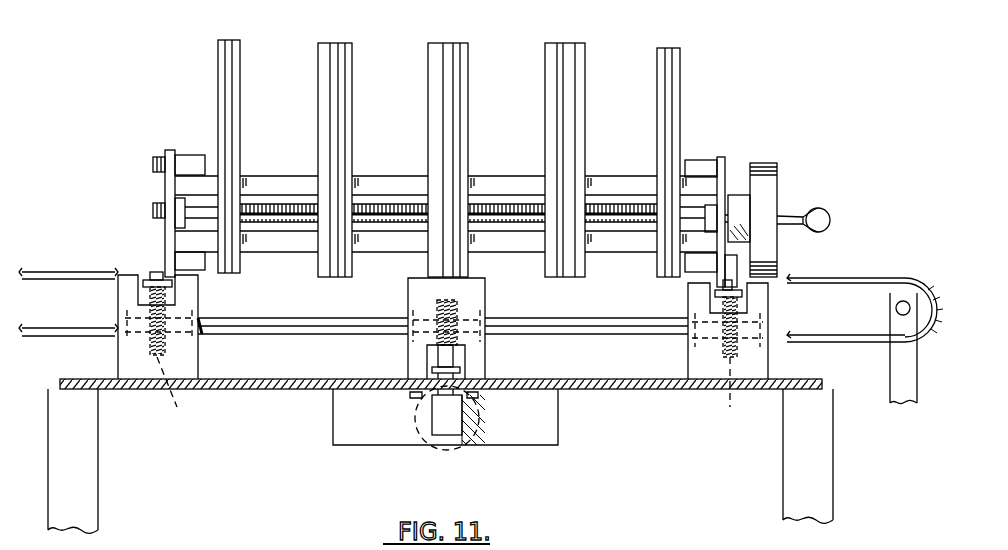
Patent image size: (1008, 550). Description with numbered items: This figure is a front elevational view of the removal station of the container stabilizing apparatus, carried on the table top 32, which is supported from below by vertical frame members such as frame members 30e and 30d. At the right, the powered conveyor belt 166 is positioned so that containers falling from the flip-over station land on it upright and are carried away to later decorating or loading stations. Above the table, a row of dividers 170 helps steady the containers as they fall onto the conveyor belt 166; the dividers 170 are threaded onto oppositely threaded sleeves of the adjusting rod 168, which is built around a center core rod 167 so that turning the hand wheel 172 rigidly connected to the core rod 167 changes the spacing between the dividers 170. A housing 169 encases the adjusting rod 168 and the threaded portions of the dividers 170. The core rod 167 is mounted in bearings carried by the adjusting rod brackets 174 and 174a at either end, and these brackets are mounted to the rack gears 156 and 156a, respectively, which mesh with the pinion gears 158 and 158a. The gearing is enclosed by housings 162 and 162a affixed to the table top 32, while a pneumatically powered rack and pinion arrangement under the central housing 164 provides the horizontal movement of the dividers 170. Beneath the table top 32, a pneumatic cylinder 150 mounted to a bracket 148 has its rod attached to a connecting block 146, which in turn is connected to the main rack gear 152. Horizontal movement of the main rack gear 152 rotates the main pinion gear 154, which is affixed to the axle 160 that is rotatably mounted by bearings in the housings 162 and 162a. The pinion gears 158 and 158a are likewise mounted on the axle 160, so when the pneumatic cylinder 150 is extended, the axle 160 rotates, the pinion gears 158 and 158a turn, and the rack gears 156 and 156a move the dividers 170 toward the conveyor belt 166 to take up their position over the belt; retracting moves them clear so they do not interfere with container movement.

The dividers 170 is at (337, 43).
The housing 169 is at (622, 188).
The adjusting rod 168 is at (502, 204).
The adjusting rod bracket 174a is at (172, 150).
The adjusting rod bracket 174 is at (720, 157).
The core rod 167 is at (153, 209).
The hand wheel 172 is at (762, 195).
The conveyor belt 166 is at (855, 280).
The housing 162a is at (182, 358).
The housing 162 is at (752, 368).
The housing 164 is at (408, 294).
The main pinion gear 154 is at (487, 290).
The main rack gear 152 is at (450, 358).
The rack gear 156a is at (150, 293).
The rack gear 156 is at (732, 300).
The pinion gear 158a is at (177, 418).
The pinion gear 158 is at (730, 413).
The axle 160 is at (302, 318).
The table top 32 is at (245, 382).
The bracket 148 is at (535, 425).
The pneumatic cylinder 150 is at (412, 447).
The connecting block 146 is at (452, 445).
The vertical frame member 30e is at (75, 493).
The vertical frame member 30d is at (810, 475).